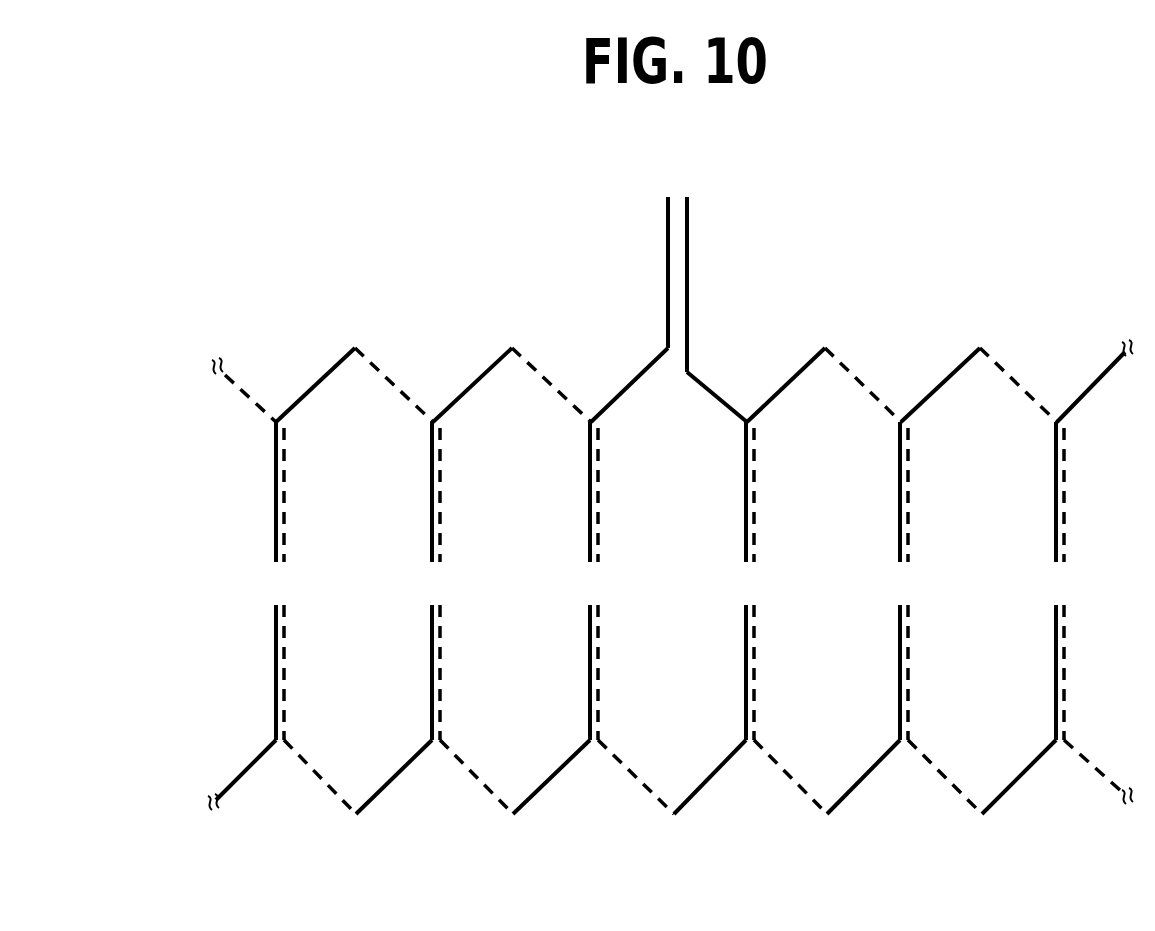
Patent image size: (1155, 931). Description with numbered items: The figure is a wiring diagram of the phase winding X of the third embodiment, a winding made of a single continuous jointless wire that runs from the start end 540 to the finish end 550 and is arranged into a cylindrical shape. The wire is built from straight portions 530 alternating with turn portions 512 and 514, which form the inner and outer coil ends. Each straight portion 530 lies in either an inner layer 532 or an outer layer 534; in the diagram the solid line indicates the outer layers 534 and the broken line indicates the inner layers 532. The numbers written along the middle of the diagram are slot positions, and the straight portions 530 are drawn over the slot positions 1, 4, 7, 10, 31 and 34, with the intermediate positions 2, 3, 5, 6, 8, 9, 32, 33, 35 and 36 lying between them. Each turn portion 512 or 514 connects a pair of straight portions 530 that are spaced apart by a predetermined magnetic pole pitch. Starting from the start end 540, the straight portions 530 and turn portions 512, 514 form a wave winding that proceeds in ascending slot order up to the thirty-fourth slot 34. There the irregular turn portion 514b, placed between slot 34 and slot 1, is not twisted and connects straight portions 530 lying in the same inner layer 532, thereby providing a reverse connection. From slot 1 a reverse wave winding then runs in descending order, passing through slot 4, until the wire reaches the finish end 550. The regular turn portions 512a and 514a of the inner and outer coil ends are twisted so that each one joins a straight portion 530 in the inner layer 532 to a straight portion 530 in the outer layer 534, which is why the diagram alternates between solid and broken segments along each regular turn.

The turn portion 514 is at (595, 433).
The straight portion 530 is at (565, 581).
The turn portion 512 is at (598, 733).
The regular turn portion 514a is at (355, 348).
The irregular turn portion 514b is at (825, 348).
The regular turn portion 512a is at (357, 816).
The inner layer 532 is at (287, 673).
The outer layer 534 is at (276, 673).
The finish end 550 is at (665, 226).
The start end 540 is at (689, 226).
The first slot 1 is at (745, 581).
The electrode segment 2 is at (715, 490).
The electrode segment 3 is at (629, 478).
The fourth slot 4 is at (590, 581).
The electrode segment 5 is at (551, 478).
The electrode segment 6 is at (472, 478).
The electrode segment 7 is at (436, 581).
The electrode segment 8 is at (394, 478).
The electrode segment 9 is at (320, 688).
The electrode segment 10 is at (273, 581).
The electrode segment 31 is at (1055, 581).
The electrode segment 32 is at (1018, 478).
The electrode segment 33 is at (940, 478).
The thirty-fourth slot 34 is at (900, 581).
The electrode segment 35 is at (809, 688).
The electrode segment 36 is at (786, 478).